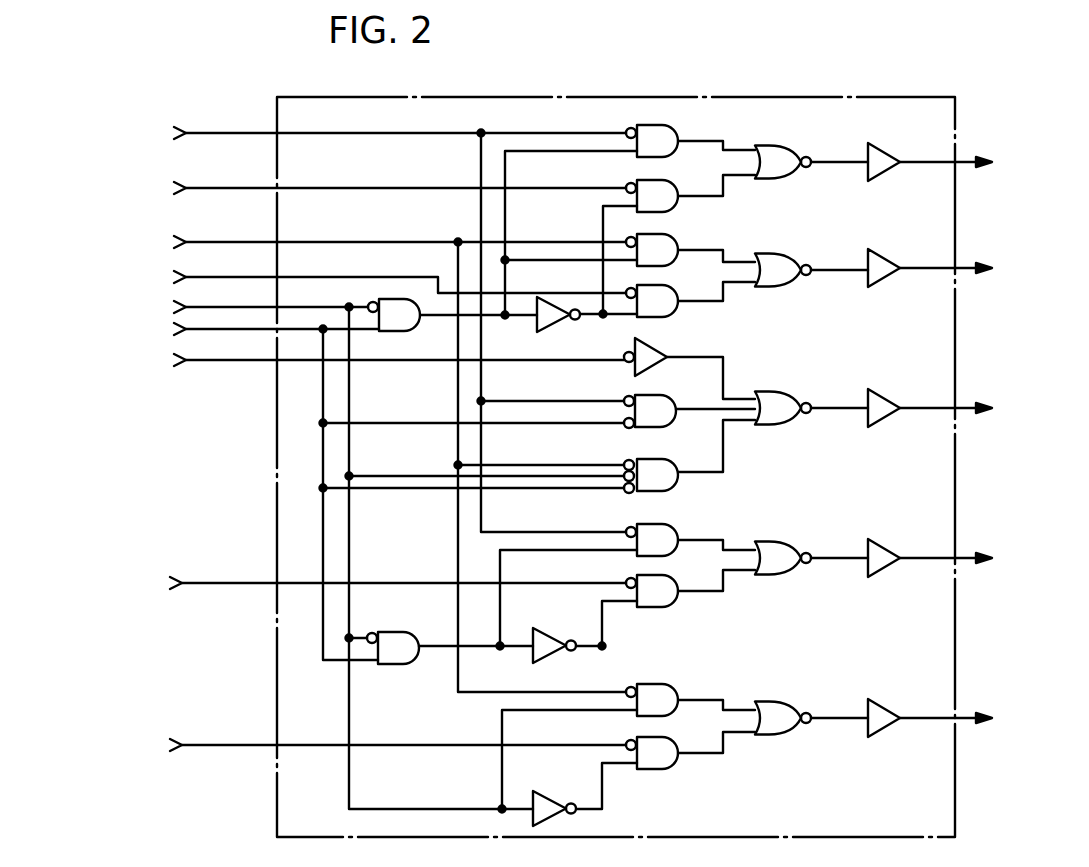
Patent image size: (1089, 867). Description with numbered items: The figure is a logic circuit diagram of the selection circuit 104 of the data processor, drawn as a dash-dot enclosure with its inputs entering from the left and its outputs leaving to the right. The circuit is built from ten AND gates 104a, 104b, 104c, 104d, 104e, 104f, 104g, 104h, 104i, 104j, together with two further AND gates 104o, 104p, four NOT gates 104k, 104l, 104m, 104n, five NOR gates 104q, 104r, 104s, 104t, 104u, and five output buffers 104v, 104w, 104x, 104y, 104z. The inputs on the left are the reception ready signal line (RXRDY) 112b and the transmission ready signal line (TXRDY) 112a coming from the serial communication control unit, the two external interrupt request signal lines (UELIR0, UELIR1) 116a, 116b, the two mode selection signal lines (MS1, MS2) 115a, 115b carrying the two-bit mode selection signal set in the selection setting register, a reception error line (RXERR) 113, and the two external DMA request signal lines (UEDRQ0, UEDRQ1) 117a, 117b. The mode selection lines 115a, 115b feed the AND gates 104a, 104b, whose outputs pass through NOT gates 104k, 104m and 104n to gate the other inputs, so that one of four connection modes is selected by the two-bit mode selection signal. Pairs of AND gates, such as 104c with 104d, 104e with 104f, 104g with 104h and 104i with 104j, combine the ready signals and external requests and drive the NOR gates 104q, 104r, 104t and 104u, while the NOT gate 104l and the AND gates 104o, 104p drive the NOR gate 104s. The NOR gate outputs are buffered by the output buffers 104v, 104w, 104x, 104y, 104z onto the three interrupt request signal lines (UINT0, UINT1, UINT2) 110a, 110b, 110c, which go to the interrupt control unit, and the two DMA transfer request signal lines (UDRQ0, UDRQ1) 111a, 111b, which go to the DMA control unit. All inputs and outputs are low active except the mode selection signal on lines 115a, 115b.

The selection circuit 104 is at (622, 97).
The AND gate 104a is at (391, 333).
The AND gate 104b is at (398, 632).
The AND gate 104c is at (662, 125).
The AND gate 104d is at (678, 205).
The AND gate 104e is at (676, 238).
The AND gate 104f is at (678, 308).
The AND gate 104g is at (657, 521).
The AND gate 104h is at (676, 602).
The AND gate 104i is at (650, 683).
The AND gate 104j is at (676, 766).
The NOT gate 104k is at (537, 333).
The NOT gate 104l is at (668, 345).
The NOT gate 104m is at (551, 628).
The NOT gate 104n is at (548, 791).
The AND gate 104o is at (648, 396).
The AND gate 104p is at (644, 459).
The NOR gate 104q is at (796, 127).
The NOR gate 104r is at (790, 254).
The NOR gate 104s is at (775, 391).
The NOR gate 104t is at (772, 542).
The NOR gate 104u is at (775, 702).
The output buffer 104v is at (885, 146).
The output buffer 104w is at (885, 252).
The output buffer 104x is at (905, 378).
The output buffer 104y is at (905, 526).
The output buffer 104z is at (885, 702).
The interrupt request signal line 110a is at (960, 160).
The interrupt request signal line 110b is at (960, 266).
The interrupt request signal line 110c is at (958, 406).
The DMA transfer request signal line 111a is at (960, 556).
The DMA transfer request signal line 111b is at (960, 716).
The transmission ready signal line 112a is at (212, 242).
The reception ready signal line 112b is at (212, 133).
The RXERR signal input line 113 is at (212, 360).
The mode selection signal line 115a is at (237, 329).
The mode selection signal line 115b is at (238, 307).
The external interrupt request signal line 116a is at (213, 188).
The external interrupt request signal line 116b is at (247, 277).
The external DMA request signal line 117a is at (222, 583).
The external DMA request signal line 117b is at (222, 745).